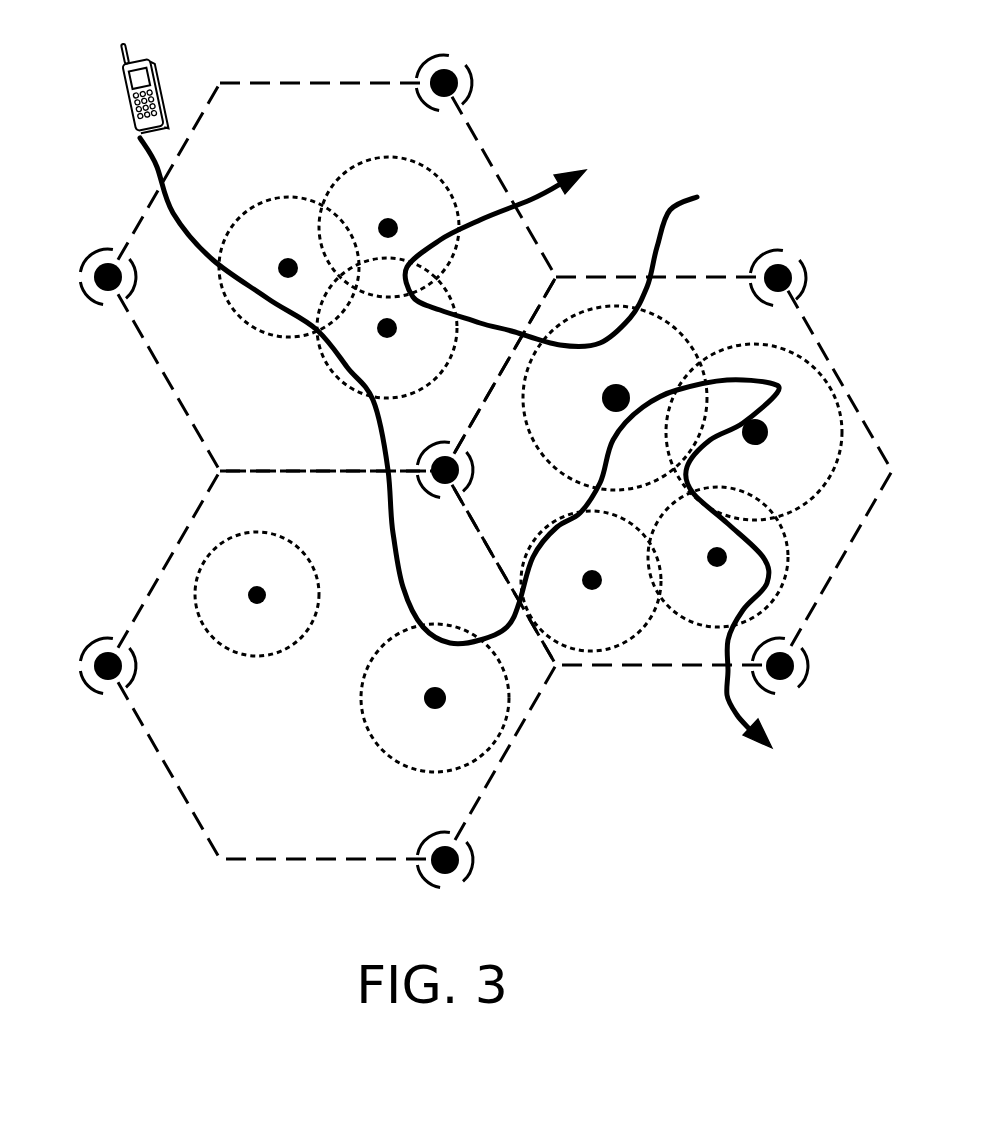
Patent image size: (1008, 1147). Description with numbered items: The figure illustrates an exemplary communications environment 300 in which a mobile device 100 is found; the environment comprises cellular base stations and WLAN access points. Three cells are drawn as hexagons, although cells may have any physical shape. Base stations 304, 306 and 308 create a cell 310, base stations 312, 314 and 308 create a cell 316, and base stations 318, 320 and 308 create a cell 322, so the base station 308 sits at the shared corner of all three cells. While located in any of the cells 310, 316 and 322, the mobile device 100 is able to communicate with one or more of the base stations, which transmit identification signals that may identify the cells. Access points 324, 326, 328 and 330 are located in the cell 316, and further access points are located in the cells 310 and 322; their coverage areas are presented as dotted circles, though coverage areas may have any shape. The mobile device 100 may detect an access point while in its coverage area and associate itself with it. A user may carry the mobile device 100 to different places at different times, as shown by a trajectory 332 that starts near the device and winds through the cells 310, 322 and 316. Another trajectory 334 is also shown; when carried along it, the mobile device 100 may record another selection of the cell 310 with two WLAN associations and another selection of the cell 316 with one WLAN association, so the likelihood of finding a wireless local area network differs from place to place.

The mobile device 100 is at (168, 92).
The communications environment 300 is at (703, 112).
The base station 304 is at (452, 67).
The base station 306 is at (96, 265).
The base station 308 is at (455, 482).
The cell 310 is at (231, 139).
The base station 312 is at (783, 267).
The base station 314 is at (790, 680).
The cell 316 is at (694, 330).
The base station 318 is at (455, 873).
The base station 320 is at (93, 670).
The cell 322 is at (268, 795).
The access point 324 is at (605, 390).
The access point 326 is at (752, 445).
The access point 328 is at (707, 565).
The access point 330 is at (582, 588).
The trajectory 332 is at (730, 692).
The trajectory 334 is at (667, 213).